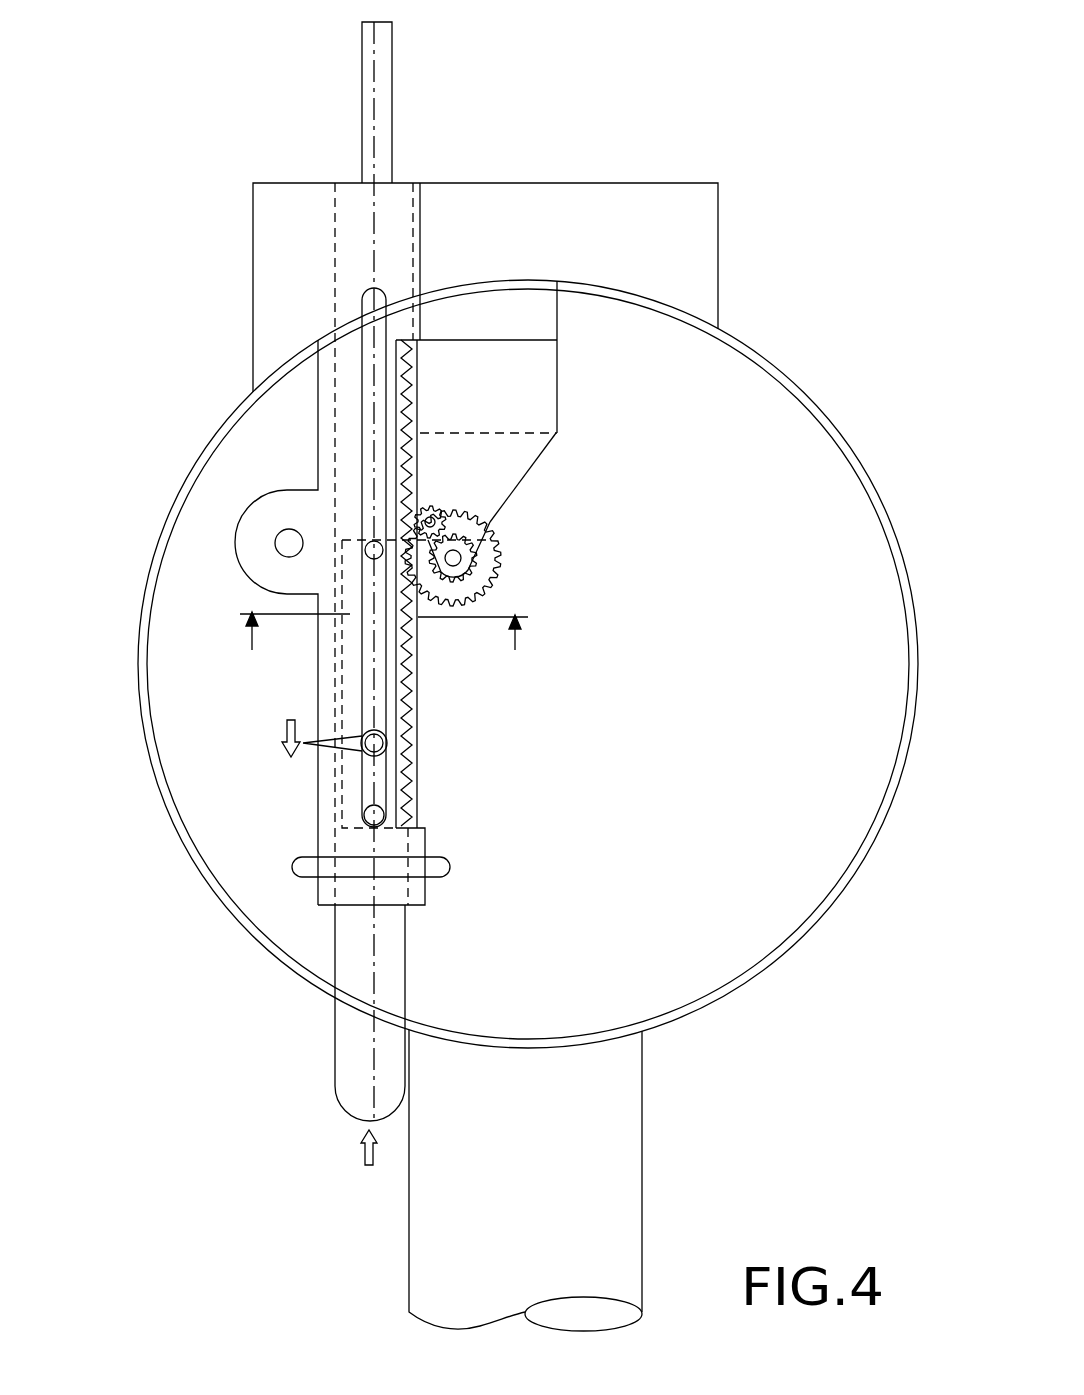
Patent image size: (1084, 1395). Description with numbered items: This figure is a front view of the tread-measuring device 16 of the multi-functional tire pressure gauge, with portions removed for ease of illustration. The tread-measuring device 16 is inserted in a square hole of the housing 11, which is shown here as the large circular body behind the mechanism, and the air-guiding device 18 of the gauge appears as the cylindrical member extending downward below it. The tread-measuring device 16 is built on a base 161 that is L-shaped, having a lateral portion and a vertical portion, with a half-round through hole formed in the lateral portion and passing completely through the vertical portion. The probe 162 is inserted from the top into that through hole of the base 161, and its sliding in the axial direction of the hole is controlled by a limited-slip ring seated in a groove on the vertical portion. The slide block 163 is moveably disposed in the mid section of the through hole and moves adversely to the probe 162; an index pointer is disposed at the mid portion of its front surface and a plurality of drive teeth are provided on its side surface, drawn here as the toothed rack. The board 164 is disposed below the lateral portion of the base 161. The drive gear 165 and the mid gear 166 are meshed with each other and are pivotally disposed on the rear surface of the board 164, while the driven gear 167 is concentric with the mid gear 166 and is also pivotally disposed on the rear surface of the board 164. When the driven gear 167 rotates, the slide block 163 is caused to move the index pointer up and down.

The housing 11 is at (207, 467).
The tread-measuring device 16 is at (605, 168).
The base 161 is at (272, 200).
The probe 162 is at (333, 1024).
The slide block 163 is at (335, 802).
The board 164 is at (523, 458).
The drive gear 165 is at (445, 523).
The mid gear 166 is at (498, 577).
The driven gear 167 is at (478, 592).
The air-guiding device 18 is at (632, 1158).